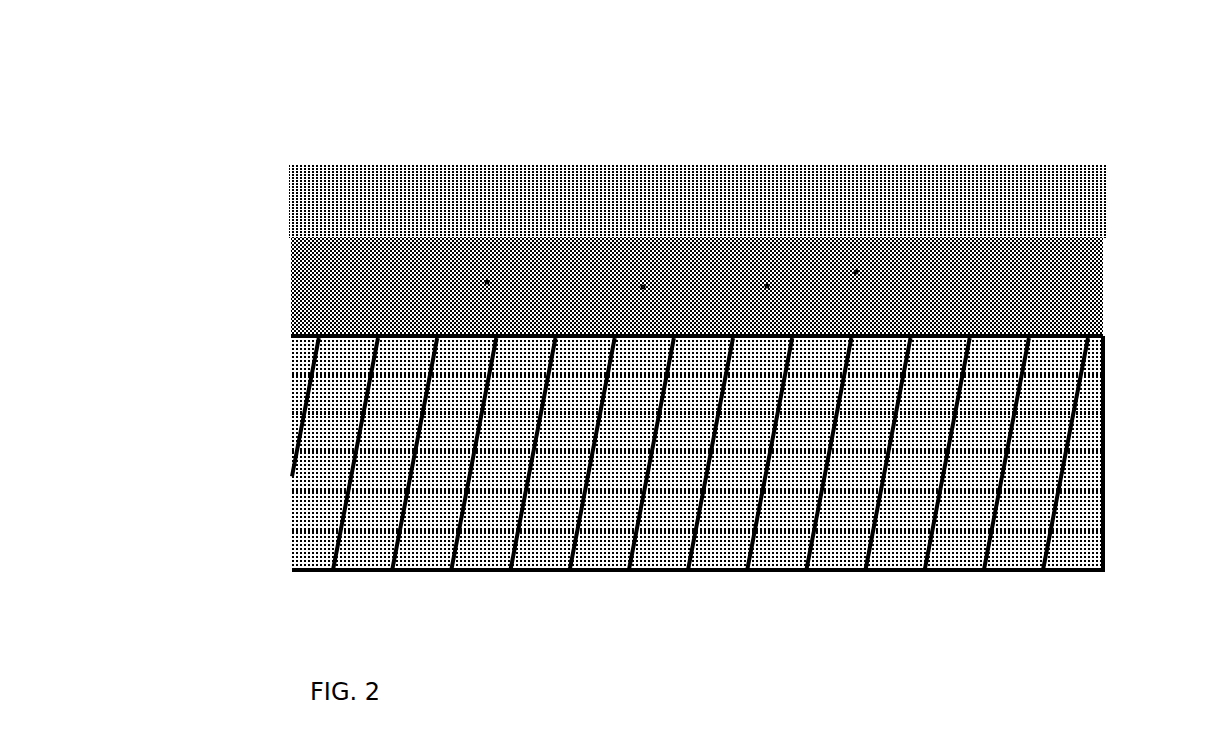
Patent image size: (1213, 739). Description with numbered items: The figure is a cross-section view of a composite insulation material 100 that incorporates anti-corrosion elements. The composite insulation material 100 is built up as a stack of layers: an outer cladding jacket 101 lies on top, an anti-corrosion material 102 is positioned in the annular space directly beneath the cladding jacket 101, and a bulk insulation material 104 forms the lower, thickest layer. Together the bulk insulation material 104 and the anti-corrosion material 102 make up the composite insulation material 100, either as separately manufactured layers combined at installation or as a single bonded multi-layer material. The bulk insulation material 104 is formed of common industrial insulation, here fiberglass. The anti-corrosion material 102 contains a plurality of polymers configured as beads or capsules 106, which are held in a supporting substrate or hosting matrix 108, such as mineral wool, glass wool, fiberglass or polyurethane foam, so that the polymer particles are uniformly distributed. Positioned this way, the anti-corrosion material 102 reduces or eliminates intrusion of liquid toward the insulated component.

The composite insulation material 100 is at (275, 165).
The cladding jacket 101 is at (1130, 166).
The anti-corrosion material 102 is at (1130, 247).
The bulk insulation material 104 is at (1130, 345).
The bead or capsule 106 is at (485, 277).
The substrate or hosting matrix 108 is at (858, 268).